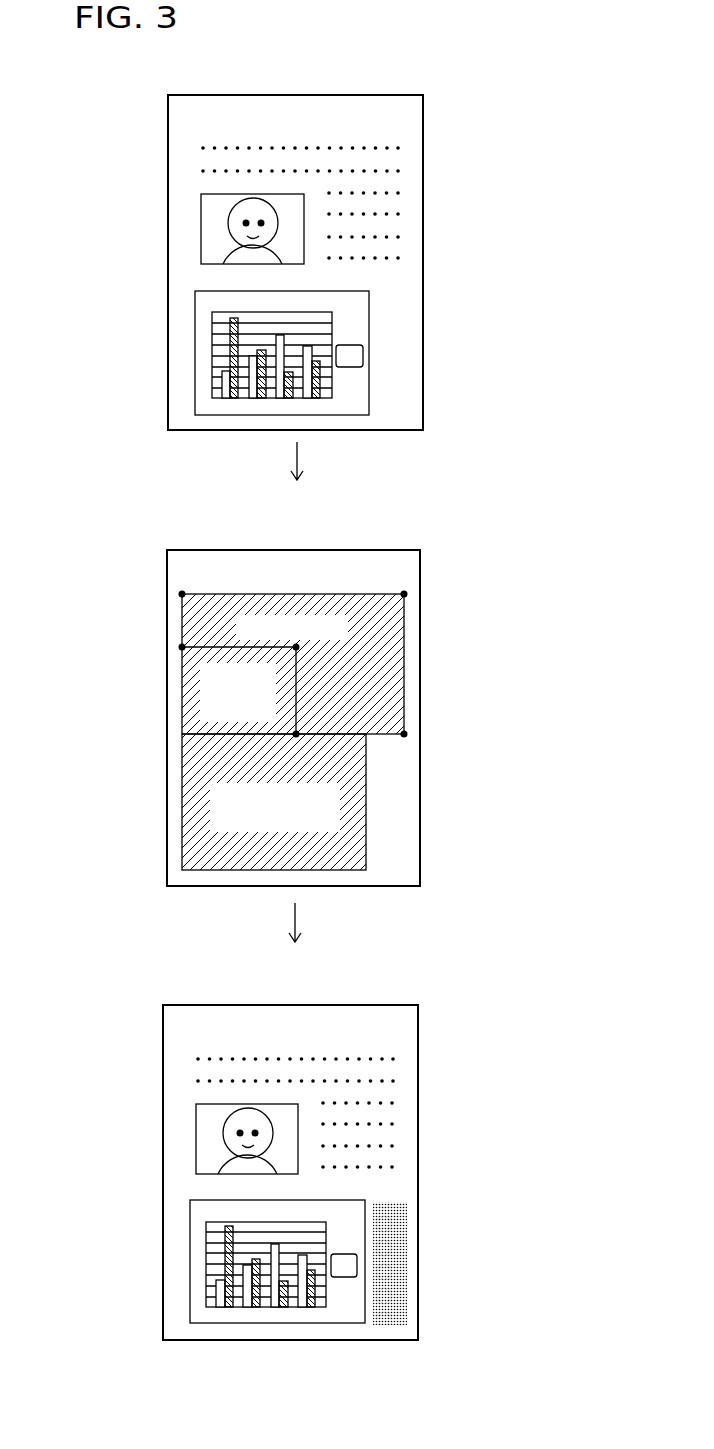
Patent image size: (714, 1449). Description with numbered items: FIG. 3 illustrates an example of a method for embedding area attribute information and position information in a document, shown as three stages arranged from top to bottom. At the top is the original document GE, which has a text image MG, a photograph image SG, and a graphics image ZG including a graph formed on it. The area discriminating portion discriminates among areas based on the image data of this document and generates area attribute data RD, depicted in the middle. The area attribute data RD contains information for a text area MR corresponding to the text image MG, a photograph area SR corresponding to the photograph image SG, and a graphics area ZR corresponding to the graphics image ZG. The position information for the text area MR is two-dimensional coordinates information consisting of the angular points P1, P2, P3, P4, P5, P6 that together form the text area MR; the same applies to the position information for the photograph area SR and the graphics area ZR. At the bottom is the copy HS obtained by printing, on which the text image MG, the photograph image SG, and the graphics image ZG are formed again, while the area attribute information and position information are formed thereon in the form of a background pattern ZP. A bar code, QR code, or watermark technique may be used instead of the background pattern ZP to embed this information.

The document GE is at (282, 77).
The text image MG is at (400, 179).
The photograph image SG is at (203, 240).
The graphics image ZG is at (212, 350).
The area attribute data RD is at (282, 531).
The text area MR is at (203, 619).
The photograph area SR is at (203, 717).
The graphics area ZR is at (197, 773).
The angular point P1 is at (404, 594).
The angular point P2 is at (182, 594).
The angular point P3 is at (182, 647).
The angular point P4 is at (296, 647).
The angular point P5 is at (296, 735).
The angular point P6 is at (404, 734).
The copy HS is at (279, 986).
The background pattern ZP is at (393, 1223).